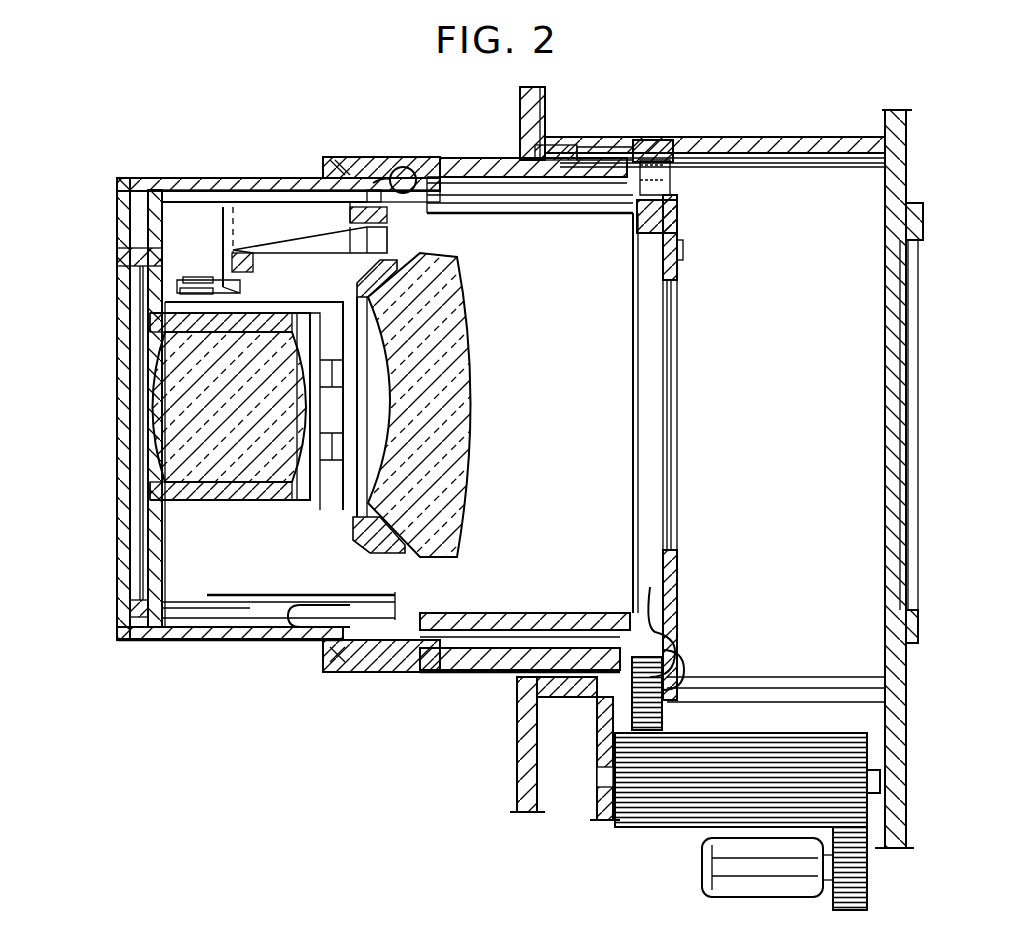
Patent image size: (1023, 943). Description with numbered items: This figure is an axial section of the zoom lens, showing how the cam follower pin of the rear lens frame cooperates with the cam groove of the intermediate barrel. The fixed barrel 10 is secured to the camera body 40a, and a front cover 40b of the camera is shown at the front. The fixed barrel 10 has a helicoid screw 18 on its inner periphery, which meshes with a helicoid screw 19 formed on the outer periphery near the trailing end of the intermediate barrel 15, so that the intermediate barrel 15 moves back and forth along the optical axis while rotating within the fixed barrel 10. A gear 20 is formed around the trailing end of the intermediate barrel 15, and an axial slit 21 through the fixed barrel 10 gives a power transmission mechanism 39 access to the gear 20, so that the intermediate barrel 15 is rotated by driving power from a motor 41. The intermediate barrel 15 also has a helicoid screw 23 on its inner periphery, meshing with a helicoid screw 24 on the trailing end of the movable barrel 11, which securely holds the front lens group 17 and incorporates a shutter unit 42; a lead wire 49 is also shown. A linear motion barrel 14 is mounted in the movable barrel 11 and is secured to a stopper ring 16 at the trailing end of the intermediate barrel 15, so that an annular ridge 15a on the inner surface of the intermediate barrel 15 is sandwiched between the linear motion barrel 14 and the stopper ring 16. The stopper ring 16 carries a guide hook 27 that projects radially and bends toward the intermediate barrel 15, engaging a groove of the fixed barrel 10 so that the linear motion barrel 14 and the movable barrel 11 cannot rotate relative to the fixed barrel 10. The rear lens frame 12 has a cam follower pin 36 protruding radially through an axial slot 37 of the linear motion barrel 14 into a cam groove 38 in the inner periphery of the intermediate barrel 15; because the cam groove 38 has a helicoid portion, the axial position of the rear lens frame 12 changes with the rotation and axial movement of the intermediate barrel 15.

The fixed barrel 10 is at (800, 135).
The movable barrel 11 is at (198, 643).
The rear lens frame 12 is at (462, 396).
The linear motion barrel 14 is at (542, 612).
The intermediate barrel 15 is at (440, 673).
The annular ridge 15a is at (658, 198).
The stopper ring 16 is at (675, 558).
The front lens group 17 is at (167, 407).
The helicoid screw 18 is at (852, 166).
The helicoid screw 19 is at (610, 153).
The gear 20 is at (663, 176).
The axial slit 21 is at (831, 680).
The helicoid screw 23 is at (492, 650).
The helicoid screw 24 is at (340, 177).
The guide hook 27 is at (653, 153).
The cam follower pin 36 is at (420, 165).
The axial slot 37 is at (572, 203).
The cam groove 38 is at (373, 180).
The power transmission mechanism 39 is at (777, 733).
The camera body 40a is at (903, 161).
The front cover 40b is at (517, 783).
The motor 41 is at (707, 873).
The shutter unit 42 is at (260, 560).
The lead wire 49 is at (250, 600).